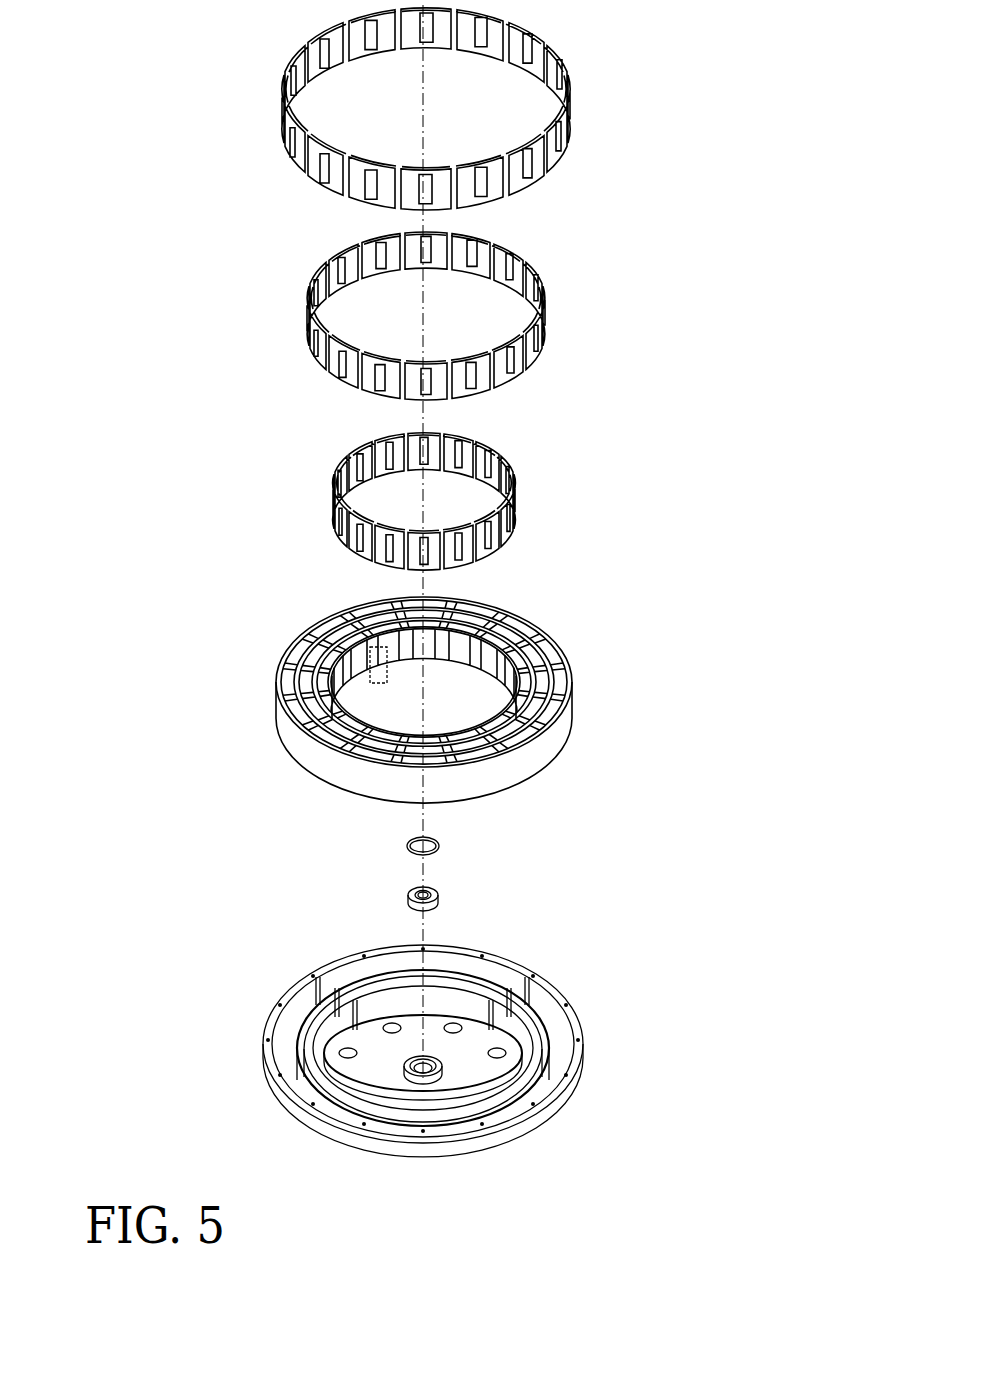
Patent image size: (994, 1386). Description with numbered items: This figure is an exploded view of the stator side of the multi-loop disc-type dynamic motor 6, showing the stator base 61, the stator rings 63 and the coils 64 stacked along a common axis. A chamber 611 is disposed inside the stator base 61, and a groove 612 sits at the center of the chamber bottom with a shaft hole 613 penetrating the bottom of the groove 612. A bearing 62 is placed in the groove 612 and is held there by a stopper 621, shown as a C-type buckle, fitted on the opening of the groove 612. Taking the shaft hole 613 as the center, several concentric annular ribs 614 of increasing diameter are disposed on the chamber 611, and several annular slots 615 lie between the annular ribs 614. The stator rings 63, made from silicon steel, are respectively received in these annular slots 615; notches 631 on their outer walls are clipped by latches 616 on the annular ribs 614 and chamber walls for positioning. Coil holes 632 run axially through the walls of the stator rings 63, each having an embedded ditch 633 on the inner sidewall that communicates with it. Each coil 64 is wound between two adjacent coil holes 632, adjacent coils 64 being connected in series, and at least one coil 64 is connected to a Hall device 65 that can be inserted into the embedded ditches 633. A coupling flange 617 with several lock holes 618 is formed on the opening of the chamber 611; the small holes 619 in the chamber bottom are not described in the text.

The multi-loop disc-type dynamic motor 6 is at (232, 392).
The stator base 61 is at (317, 1122).
The chamber 611 is at (472, 1058).
The groove 612 is at (410, 1057).
The shaft hole 613 is at (422, 1082).
The annular ribs 614 is at (305, 1082).
The annular slots 615 is at (532, 1066).
The latches 616 is at (305, 1018).
The coupling flange 617 is at (463, 1130).
The lock holes 618 is at (548, 1112).
The hole 619 is at (462, 1022).
The bearing 62 is at (408, 899).
The stopper 621 is at (440, 845).
The stator rings 63 is at (467, 623).
The notches 631 is at (320, 748).
The coil holes 632 is at (278, 665).
The embedded ditch 633 is at (310, 637).
The coil 64 is at (283, 132).
The Hall device 65 is at (388, 655).